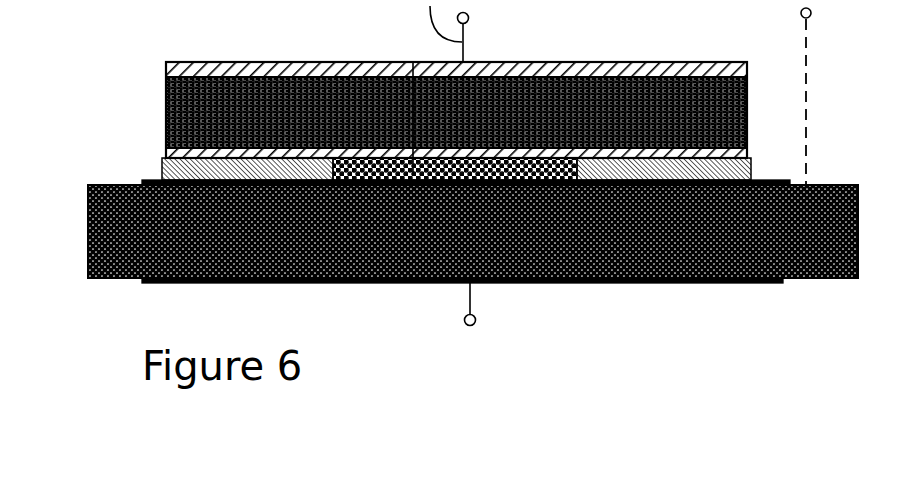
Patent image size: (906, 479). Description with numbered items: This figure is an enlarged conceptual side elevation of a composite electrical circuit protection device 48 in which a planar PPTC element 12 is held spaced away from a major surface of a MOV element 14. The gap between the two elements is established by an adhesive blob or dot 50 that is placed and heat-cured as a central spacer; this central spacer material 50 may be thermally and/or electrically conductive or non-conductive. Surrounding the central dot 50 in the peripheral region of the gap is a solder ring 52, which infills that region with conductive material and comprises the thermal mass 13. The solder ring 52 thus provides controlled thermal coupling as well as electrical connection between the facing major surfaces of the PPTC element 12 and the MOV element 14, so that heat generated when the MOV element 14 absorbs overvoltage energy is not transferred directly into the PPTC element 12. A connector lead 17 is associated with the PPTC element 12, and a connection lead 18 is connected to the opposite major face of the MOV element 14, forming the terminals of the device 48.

The PPTC element 12 is at (518, 62).
The thermal mass 13 is at (160, 168).
The MOV element 14 is at (418, 283).
The connector lead 17 is at (806, 58).
The connection lead 18 is at (578, 303).
The device 48 is at (467, 188).
The adhesive blob or dot 50 is at (412, 63).
The solder ring 52 is at (752, 176).